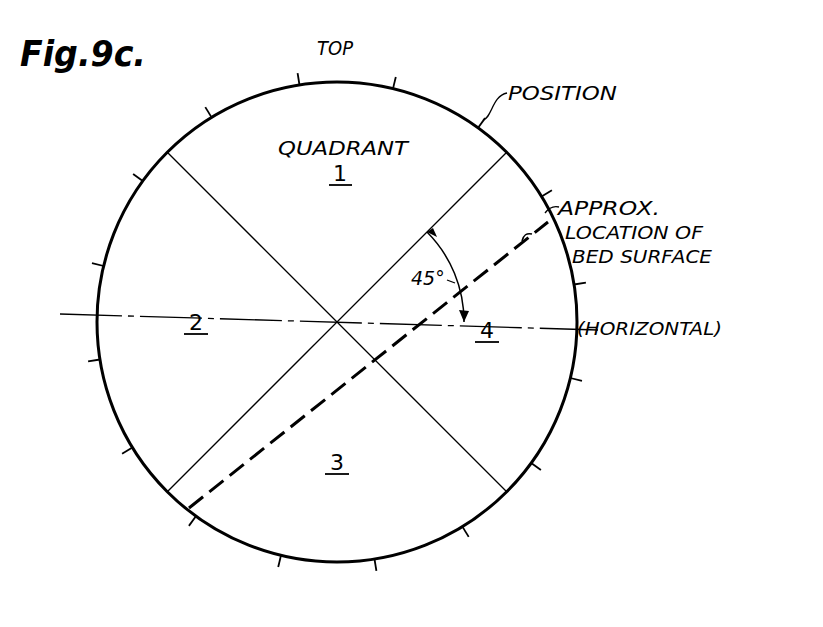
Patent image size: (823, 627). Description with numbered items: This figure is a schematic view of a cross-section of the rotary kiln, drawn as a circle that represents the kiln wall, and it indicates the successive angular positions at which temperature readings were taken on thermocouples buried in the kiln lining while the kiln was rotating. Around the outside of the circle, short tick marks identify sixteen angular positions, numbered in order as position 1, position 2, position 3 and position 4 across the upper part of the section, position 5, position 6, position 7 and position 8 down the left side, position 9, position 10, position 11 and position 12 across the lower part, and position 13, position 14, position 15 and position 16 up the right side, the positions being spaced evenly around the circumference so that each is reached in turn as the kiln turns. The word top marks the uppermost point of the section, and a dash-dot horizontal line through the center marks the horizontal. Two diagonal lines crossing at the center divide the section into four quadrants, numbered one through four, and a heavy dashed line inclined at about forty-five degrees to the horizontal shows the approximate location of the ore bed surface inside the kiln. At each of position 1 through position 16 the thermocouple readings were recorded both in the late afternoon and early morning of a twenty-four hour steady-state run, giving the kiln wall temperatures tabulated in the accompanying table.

The angular position 1 is at (481, 110).
The angular position 2 is at (390, 71).
The angular position 3 is at (292, 68).
The angular position 4 is at (202, 104).
The angular position 5 is at (130, 176).
The angular position 6 is at (91, 268).
The angular position 7 is at (88, 370).
The angular position 8 is at (121, 461).
The angular position 9 is at (189, 532).
The angular position 10 is at (278, 574).
The angular position 11 is at (374, 577).
The angular position 12 is at (466, 546).
The angular position 13 is at (548, 477).
The angular position 14 is at (590, 383).
The angular position 15 is at (593, 285).
The angular position 16 is at (556, 183).